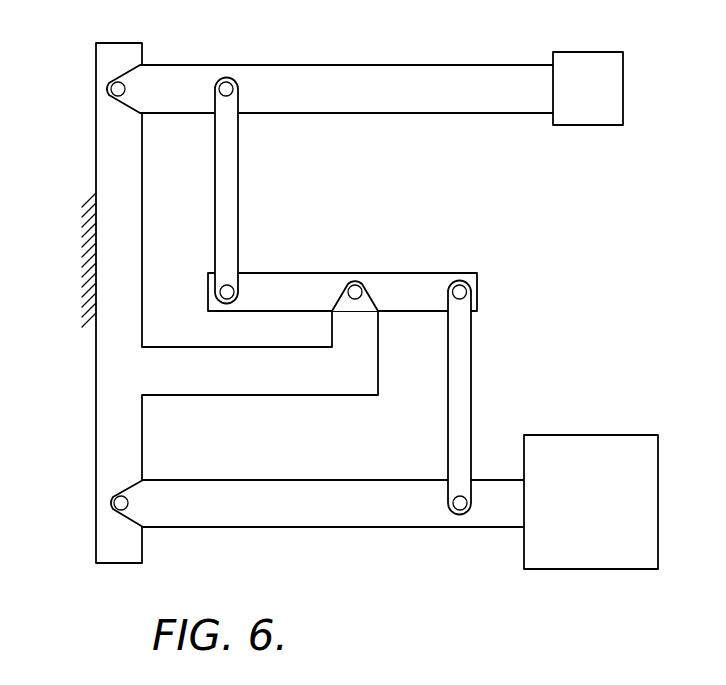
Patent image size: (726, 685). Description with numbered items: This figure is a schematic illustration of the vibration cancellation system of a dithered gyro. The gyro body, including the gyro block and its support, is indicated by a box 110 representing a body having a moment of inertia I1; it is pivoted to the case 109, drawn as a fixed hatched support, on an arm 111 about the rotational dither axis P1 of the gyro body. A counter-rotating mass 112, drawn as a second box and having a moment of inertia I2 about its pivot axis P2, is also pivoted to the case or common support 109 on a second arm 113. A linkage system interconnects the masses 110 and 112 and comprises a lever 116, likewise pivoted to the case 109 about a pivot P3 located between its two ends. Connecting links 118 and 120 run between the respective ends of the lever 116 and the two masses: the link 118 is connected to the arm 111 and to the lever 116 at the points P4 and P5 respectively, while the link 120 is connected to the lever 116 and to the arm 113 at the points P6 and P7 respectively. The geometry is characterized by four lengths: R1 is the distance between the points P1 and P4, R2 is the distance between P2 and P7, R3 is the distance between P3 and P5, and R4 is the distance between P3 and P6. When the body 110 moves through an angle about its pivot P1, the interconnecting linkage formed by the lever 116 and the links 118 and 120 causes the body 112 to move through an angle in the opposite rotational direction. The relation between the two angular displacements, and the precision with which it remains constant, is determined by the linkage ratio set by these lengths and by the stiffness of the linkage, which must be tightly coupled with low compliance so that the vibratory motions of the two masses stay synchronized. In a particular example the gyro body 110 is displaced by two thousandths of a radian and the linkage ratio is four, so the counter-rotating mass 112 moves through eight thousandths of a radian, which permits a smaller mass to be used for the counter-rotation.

The case 109 is at (92, 244).
The gyro body 110 is at (596, 482).
The arm 111 is at (360, 521).
The counter-rotating mass 112 is at (610, 71).
The second arm 113 is at (383, 73).
The lever 116 is at (273, 280).
The connecting link 118 is at (466, 380).
The connecting link 120 is at (236, 186).
The rotational dither axis P1 is at (113, 503).
The pivot axis P2 is at (111, 89).
The pivot P3 is at (357, 282).
The connection point P4 is at (461, 511).
The connection point P5 is at (467, 292).
The connection point P6 is at (220, 292).
The connection point P7 is at (229, 82).
The distance between P1 and P4 R1 is at (317, 503).
The distance between P2 and P7 R2 is at (330, 89).
The distance between P3 and P5 R3 is at (416, 294).
The distance between P3 and P6 R4 is at (281, 294).
The moment of inertia of gyro body I1 is at (591, 502).
The moment of inertia of counter-rotating mass I2 is at (620, 33).